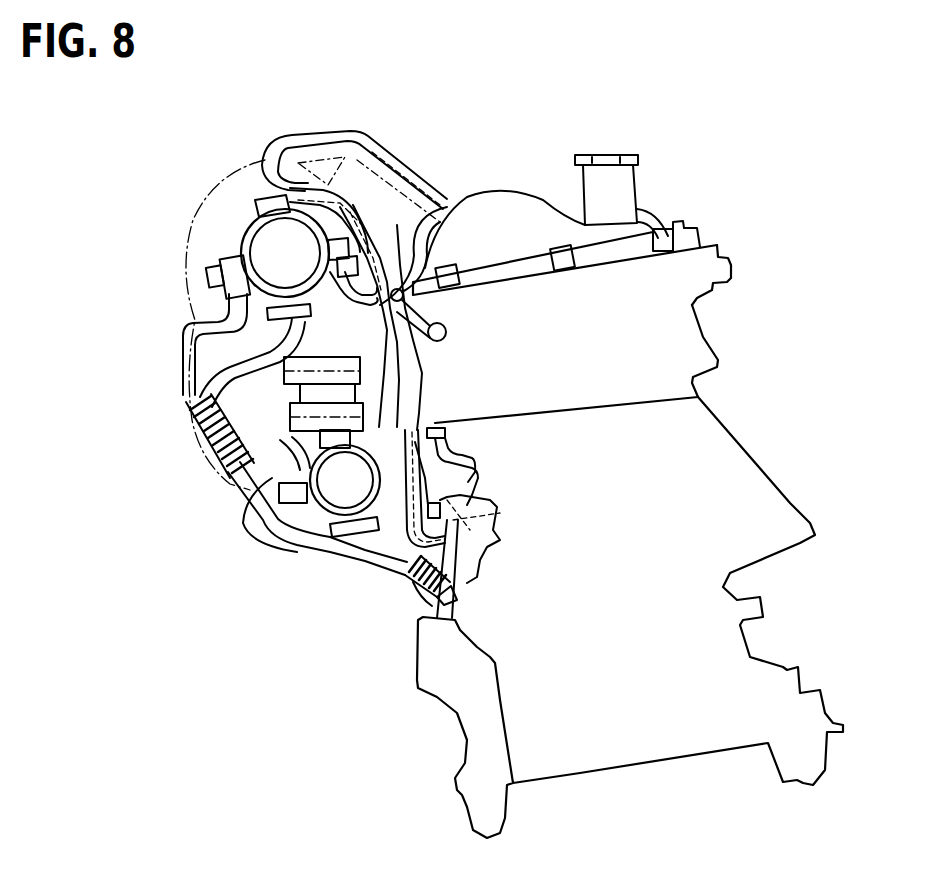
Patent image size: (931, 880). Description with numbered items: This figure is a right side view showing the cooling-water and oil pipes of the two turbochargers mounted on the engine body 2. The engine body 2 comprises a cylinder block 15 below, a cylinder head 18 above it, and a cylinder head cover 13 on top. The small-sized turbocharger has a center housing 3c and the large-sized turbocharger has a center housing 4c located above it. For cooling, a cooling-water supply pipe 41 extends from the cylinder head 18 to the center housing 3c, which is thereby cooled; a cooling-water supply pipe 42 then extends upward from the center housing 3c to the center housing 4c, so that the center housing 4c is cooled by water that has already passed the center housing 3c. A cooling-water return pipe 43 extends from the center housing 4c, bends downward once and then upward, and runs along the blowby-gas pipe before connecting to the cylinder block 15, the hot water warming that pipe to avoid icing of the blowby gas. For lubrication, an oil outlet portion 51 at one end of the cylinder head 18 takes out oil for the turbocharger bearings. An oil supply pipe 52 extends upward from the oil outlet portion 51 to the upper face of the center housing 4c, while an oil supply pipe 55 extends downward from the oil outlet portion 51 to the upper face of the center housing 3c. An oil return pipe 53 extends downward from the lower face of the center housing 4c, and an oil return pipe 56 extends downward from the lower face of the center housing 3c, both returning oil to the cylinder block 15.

The engine body 2 is at (717, 242).
The cylinder head 18 is at (710, 335).
The cylinder block 15 is at (790, 503).
The cylinder head cover 13 is at (513, 193).
The cooling-water return pipe 43 is at (302, 134).
The oil supply pipe 52 is at (358, 225).
The center housing 4c is at (250, 237).
The center housing 3c is at (318, 508).
The cooling-water supply pipe 42 is at (183, 352).
The oil return pipe 53 is at (327, 547).
The oil outlet portion 51 is at (446, 332).
The oil supply pipe 55 is at (362, 376).
The cooling-water supply pipe 41 is at (500, 512).
The oil return pipe 56 is at (462, 582).